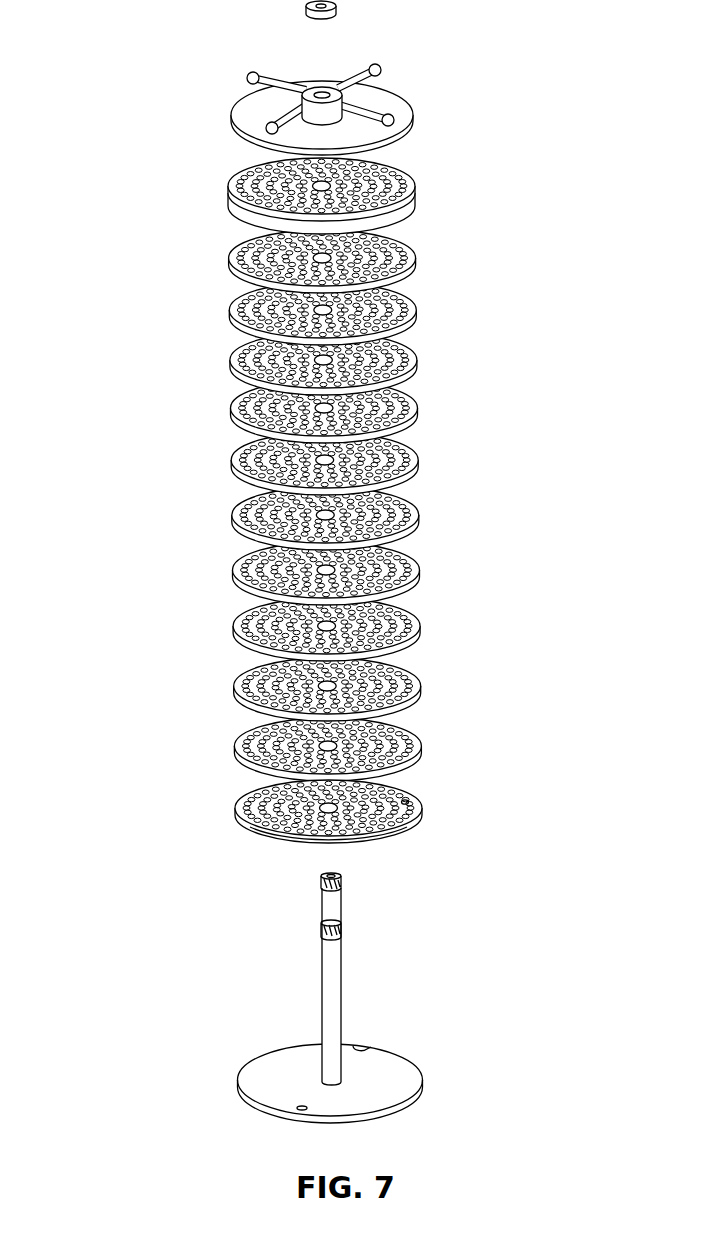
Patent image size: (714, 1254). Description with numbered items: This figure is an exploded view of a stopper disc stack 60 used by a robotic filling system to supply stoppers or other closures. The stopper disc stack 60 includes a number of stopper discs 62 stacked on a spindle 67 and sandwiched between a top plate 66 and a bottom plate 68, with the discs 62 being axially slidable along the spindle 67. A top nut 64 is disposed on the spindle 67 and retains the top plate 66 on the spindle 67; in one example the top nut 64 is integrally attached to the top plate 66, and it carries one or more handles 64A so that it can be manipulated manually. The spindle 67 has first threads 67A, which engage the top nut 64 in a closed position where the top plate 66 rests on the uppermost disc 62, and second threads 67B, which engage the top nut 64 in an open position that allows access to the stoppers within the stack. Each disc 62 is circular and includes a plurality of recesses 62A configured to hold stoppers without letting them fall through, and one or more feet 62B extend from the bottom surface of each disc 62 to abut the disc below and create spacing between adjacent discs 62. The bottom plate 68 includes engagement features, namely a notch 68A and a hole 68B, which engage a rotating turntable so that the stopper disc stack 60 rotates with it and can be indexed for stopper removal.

The stopper disc stack 60 is at (174, 236).
The stopper disc 62 is at (425, 810).
The recess 62A is at (407, 801).
The foot 62B is at (306, 856).
The top nut 64 is at (318, 88).
The handle 64A is at (378, 65).
The top plate 66 is at (400, 108).
The spindle 67 is at (335, 985).
The first threads 67A is at (342, 928).
The second threads 67B is at (342, 878).
The bottom plate 68 is at (400, 1075).
The notch 68A is at (370, 1045).
The hole 68B is at (305, 1110).